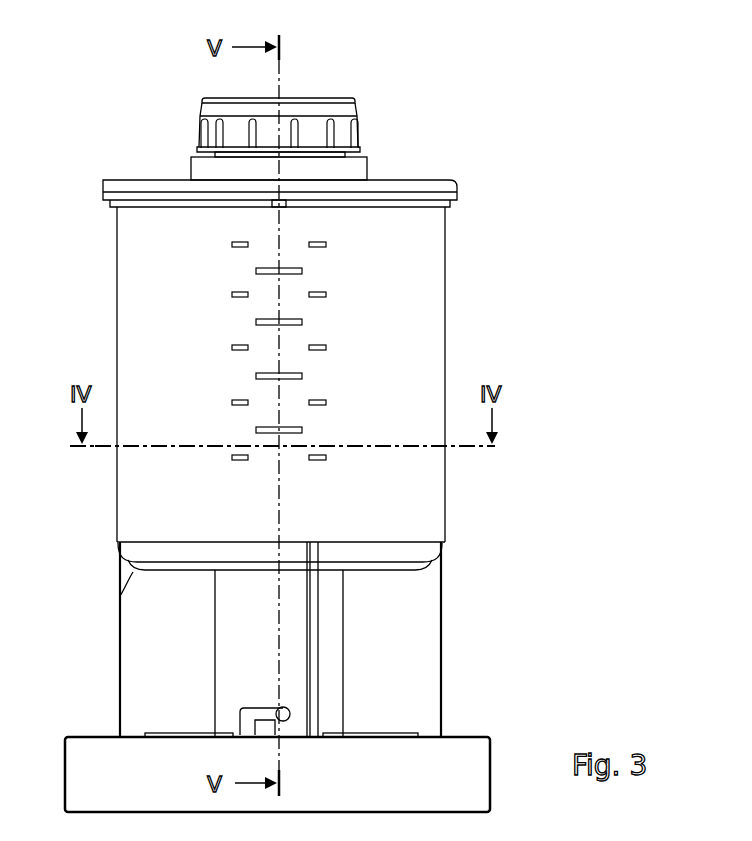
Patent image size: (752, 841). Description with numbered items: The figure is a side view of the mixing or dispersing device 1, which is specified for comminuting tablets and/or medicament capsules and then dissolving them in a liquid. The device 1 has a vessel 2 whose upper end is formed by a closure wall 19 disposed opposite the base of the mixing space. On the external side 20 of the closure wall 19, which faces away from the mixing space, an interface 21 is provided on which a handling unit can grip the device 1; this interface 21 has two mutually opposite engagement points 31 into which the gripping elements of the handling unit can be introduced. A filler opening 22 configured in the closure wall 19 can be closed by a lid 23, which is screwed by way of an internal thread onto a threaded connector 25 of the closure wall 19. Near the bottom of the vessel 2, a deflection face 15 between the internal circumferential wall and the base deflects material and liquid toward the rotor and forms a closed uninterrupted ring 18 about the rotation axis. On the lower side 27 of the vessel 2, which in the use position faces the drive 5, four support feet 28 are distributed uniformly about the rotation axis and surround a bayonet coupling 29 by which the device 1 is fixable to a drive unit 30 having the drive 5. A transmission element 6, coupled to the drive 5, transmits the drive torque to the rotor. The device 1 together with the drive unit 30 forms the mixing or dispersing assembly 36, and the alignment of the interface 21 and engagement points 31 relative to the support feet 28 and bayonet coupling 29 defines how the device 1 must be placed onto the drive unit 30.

The mixing or dispersing device 1 is at (560, 138).
The vessel 2 is at (423, 372).
The drive 5 is at (222, 761).
The transmission element 6 is at (263, 607).
The deflection face 15 is at (420, 568).
The closed uninterrupted ring 18 is at (445, 555).
The closure wall 19 is at (447, 180).
The external side 20 is at (442, 112).
The interface 21 is at (108, 181).
The filler opening 22 is at (215, 97).
The lid 23 is at (325, 97).
The threaded connector 25 is at (200, 128).
The lower side 27 is at (120, 596).
The support feet 28 is at (395, 637).
The bayonet coupling 29 is at (290, 714).
The drive unit 30 is at (470, 767).
The engagement points 31 is at (191, 163).
The mixing or dispersing assembly 36 is at (613, 195).